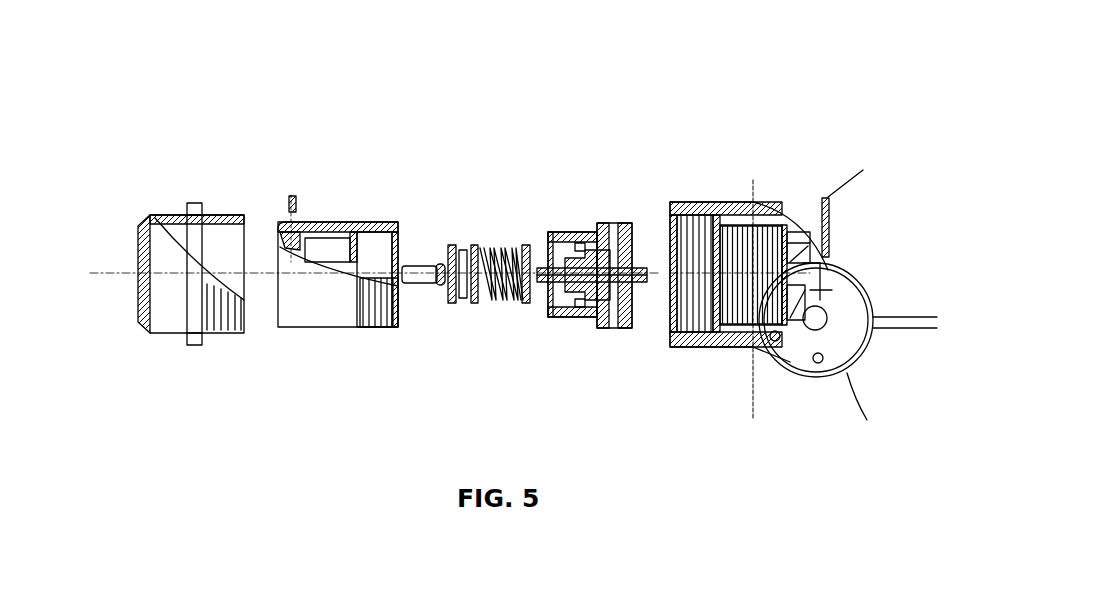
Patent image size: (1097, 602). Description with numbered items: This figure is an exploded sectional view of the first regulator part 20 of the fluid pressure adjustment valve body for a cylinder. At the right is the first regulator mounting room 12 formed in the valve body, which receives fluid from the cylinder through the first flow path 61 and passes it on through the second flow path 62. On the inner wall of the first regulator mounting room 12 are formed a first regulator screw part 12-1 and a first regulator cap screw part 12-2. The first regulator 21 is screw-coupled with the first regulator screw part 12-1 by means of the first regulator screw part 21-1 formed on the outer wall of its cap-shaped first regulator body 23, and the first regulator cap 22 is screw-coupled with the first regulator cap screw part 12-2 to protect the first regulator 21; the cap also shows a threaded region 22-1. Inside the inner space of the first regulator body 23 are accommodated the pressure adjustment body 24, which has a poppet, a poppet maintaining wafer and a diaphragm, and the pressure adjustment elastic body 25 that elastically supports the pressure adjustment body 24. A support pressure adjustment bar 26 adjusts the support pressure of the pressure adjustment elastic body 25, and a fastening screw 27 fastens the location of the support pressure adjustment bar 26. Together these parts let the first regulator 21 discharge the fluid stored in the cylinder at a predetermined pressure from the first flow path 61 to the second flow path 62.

The first regulator mounting room 12 is at (868, 110).
The first regulator screw part 12-1 is at (745, 235).
The first regulator cap screw part 12-2 is at (700, 207).
The first regulator part 20 is at (222, 125).
The first regulator 21 is at (605, 117).
The first regulator screw part 21-1 is at (380, 330).
The first regulator cap 22 is at (140, 238).
The cap threaded portion 22-1 is at (222, 335).
The first regulator body 23 is at (340, 222).
The pressure adjustment body 24 is at (571, 232).
The pressure adjustment elastic body 25 is at (473, 250).
The support pressure adjustment bar 26 is at (420, 266).
The fastening screw 27 is at (293, 196).
The first flow path 61 is at (857, 277).
The second flow path 62 is at (833, 238).